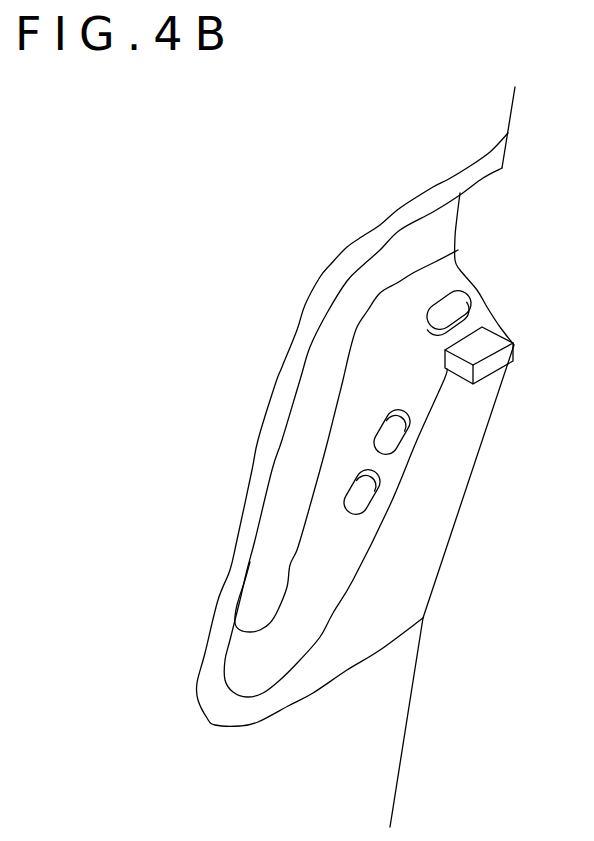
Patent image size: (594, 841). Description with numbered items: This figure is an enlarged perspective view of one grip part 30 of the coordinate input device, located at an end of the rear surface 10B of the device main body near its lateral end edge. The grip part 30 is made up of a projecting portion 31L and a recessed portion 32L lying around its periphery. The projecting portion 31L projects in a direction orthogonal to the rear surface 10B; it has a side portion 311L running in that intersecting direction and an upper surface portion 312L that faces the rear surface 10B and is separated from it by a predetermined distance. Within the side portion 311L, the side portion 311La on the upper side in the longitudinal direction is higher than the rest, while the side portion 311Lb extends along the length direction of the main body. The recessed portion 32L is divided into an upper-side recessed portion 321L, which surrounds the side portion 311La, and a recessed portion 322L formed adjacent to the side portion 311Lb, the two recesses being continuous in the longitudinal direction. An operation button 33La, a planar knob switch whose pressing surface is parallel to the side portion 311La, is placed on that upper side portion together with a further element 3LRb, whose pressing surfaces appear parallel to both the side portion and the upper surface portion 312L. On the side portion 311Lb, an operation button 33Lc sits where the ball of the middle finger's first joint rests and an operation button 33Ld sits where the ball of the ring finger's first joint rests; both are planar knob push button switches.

The rear surface 10B is at (378, 746).
The operating device 30 is at (505, 418).
The projecting portion 31L is at (452, 468).
The side portion 311L is at (317, 539).
The side portion 311La is at (466, 282).
The side portion 311Lb is at (323, 506).
The upper surface portion 312L is at (432, 527).
The recessed portion 32L is at (425, 143).
The upper-side recessed portion 321L is at (410, 253).
The recessed portion 322L is at (310, 385).
The operation button 33La is at (445, 276).
The operation button 33Lc is at (385, 424).
The operation button 33Ld is at (348, 488).
The switch 3LRb is at (492, 338).